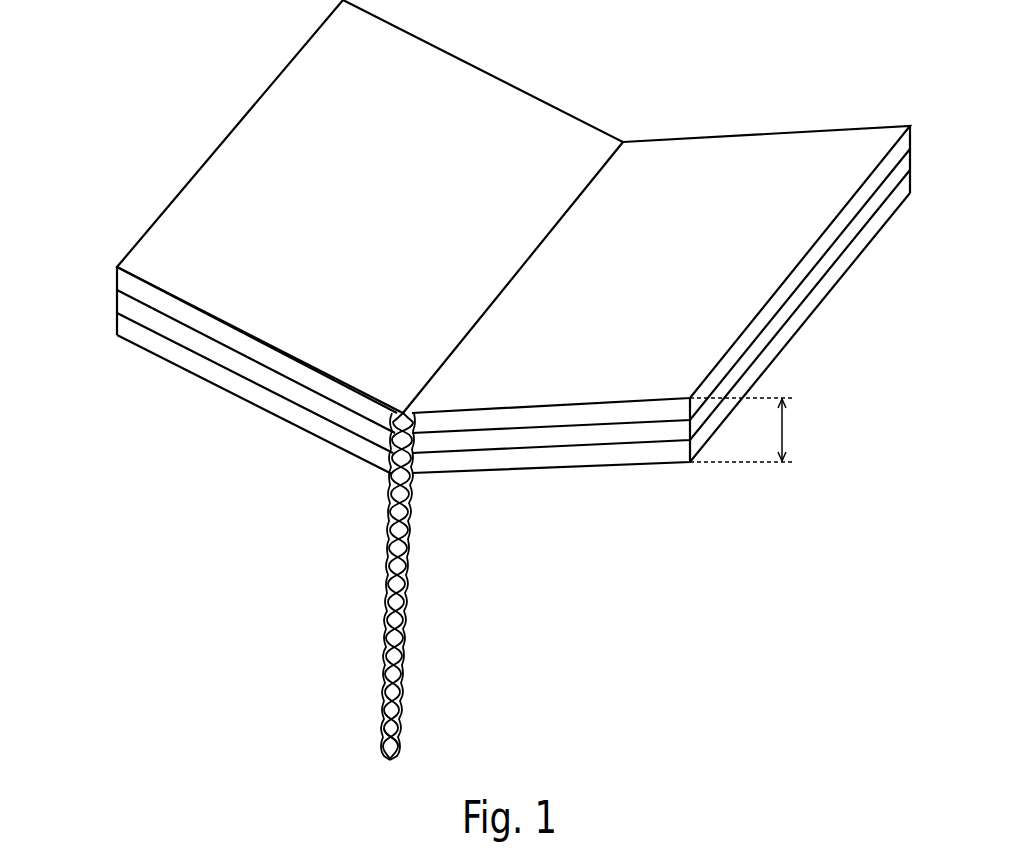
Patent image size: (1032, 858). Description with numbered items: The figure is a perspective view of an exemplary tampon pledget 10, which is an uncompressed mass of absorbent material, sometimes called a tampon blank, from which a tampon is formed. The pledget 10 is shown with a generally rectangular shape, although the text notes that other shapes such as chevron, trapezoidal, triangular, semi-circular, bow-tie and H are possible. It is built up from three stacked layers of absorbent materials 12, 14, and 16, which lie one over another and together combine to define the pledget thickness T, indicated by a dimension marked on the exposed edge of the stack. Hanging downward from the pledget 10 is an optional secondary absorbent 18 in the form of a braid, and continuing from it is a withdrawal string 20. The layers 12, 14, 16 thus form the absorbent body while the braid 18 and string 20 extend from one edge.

The tampon pledget 10 is at (740, 277).
The layer of absorbent material 12 is at (145, 292).
The layer of absorbent material 14 is at (160, 320).
The layer of absorbent material 16 is at (218, 374).
The secondary absorbent 18 is at (408, 558).
The withdrawal string 20 is at (398, 690).
The pledget thickness T is at (782, 428).